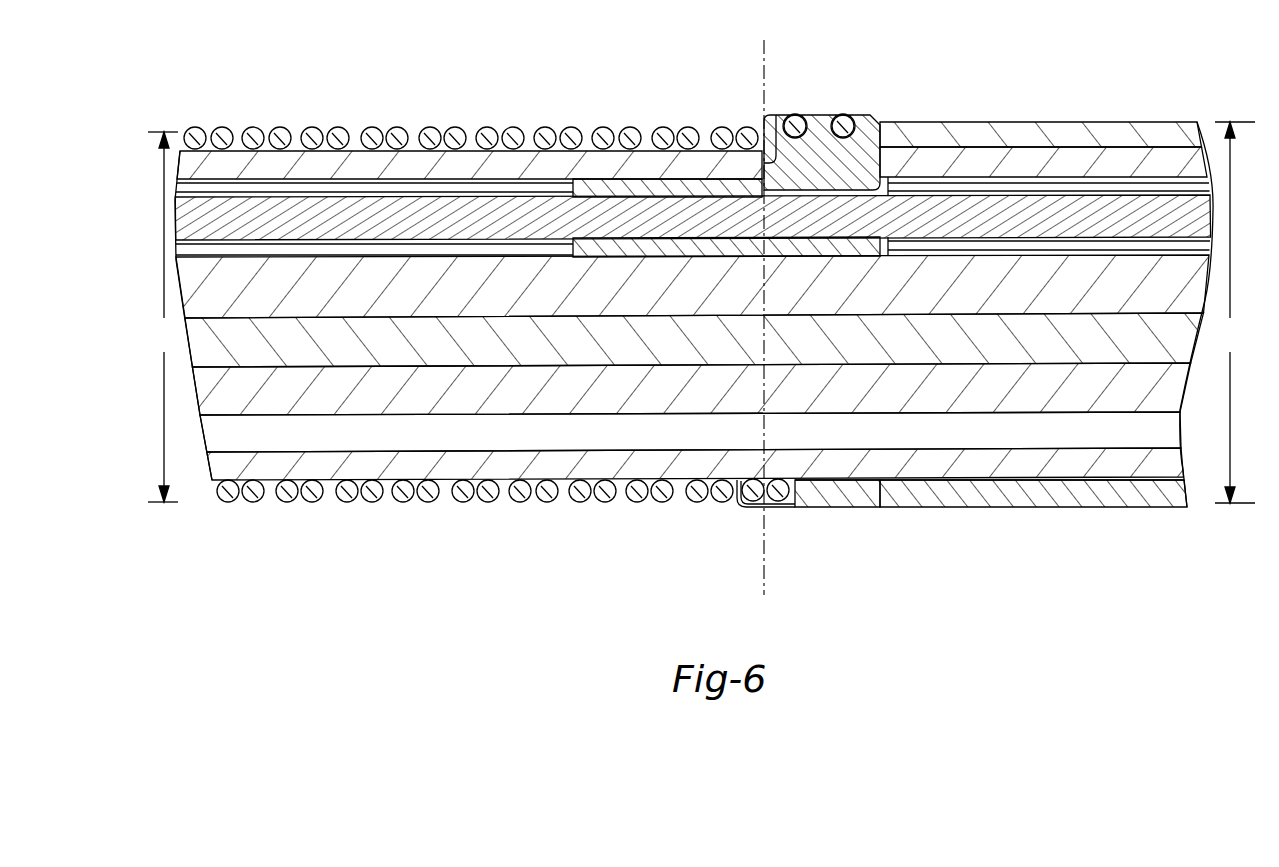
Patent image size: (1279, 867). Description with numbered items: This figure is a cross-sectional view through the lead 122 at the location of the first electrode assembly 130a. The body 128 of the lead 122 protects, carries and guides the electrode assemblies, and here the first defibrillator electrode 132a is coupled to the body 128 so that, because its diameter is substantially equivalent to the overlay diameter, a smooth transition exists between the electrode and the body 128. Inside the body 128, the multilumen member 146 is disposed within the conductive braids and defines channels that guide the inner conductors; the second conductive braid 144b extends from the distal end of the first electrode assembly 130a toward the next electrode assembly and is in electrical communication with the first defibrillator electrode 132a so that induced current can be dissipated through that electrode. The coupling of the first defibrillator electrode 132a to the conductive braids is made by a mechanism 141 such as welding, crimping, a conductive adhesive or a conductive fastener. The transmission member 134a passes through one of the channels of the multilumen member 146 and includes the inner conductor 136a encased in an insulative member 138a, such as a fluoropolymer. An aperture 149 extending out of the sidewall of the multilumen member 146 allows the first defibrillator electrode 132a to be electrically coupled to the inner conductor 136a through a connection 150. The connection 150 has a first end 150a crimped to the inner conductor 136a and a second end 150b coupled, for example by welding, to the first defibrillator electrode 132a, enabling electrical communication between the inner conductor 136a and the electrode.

The lead 122 is at (953, 80).
The body 128 is at (1003, 520).
The first electrode assembly 130a is at (291, 86).
The first defibrillator electrode 132a is at (341, 128).
The transmission member 134a is at (1027, 172).
The inner conductor 136a is at (887, 200).
The insulative member 138a is at (1152, 187).
The coupling mechanism 141 is at (759, 510).
The second conductive braid 144b is at (843, 510).
The multilumen member 146 is at (417, 130).
The aperture 149 is at (766, 160).
The connection 150 is at (813, 106).
The first end 150a is at (592, 177).
The second end 150b is at (824, 117).